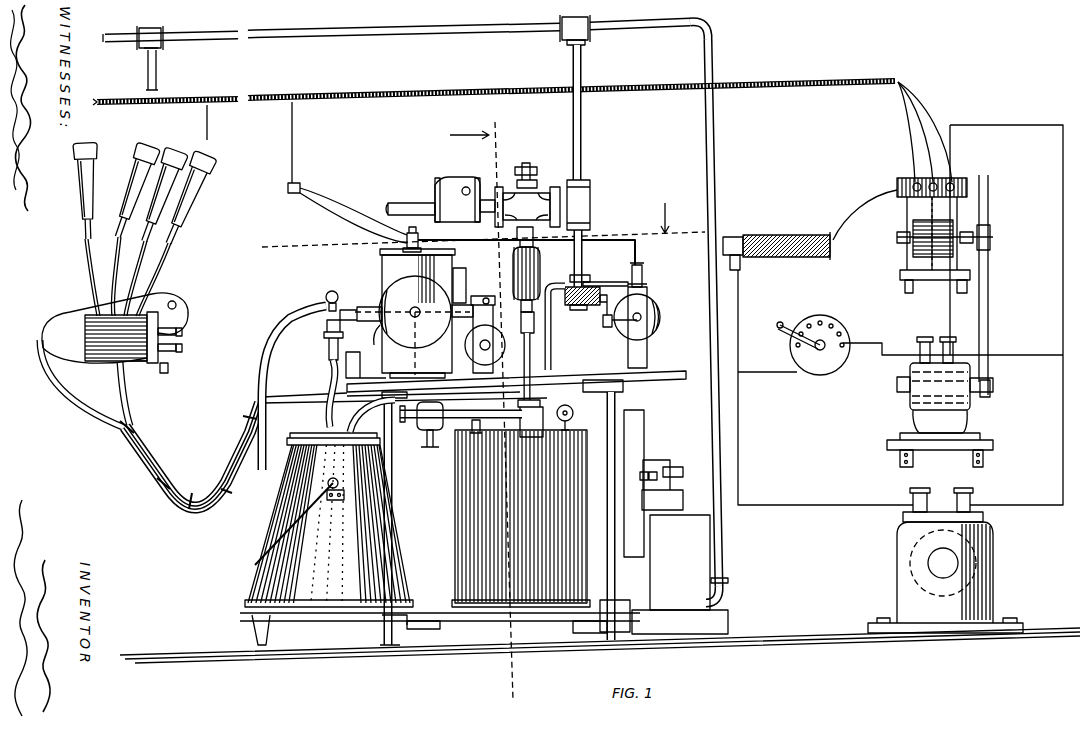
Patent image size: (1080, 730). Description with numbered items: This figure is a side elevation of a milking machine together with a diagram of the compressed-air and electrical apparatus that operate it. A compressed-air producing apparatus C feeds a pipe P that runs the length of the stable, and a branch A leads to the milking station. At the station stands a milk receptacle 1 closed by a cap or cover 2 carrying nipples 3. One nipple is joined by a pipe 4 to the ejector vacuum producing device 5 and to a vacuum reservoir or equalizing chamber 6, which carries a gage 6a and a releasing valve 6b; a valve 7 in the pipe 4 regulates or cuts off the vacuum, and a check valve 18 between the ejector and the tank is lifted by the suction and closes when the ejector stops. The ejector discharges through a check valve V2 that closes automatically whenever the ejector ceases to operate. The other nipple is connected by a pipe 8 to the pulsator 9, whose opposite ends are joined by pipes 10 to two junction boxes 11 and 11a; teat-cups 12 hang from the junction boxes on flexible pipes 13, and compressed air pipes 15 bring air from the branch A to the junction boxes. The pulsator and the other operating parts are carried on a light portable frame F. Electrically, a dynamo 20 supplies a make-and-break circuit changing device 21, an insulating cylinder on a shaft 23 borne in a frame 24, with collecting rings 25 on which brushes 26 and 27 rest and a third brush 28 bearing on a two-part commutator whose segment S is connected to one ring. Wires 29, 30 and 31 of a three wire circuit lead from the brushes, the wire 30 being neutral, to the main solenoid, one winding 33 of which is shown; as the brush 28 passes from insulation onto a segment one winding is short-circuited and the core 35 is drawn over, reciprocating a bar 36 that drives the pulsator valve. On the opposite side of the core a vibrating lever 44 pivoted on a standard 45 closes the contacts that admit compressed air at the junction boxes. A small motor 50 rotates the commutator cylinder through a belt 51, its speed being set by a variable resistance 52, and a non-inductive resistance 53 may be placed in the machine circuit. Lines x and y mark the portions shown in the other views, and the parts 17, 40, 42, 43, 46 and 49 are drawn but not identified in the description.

The milk receptacle 1 is at (297, 521).
The cap or cover 2 is at (292, 456).
The nipples 3 is at (378, 420).
The pipe 4 is at (476, 404).
The vacuum producing device 5 is at (536, 186).
The vacuum reservoir or equalizing chamber 6 is at (456, 531).
The gage 6a is at (573, 413).
The releasing valve 6b is at (470, 436).
The valve 7 is at (427, 446).
The pipe 8 is at (322, 416).
The pulsator 9 is at (326, 299).
The vacuum pipes 10 is at (274, 388).
The junction box 11 is at (85, 330).
The junction box 11a is at (130, 366).
The teat-cups 12 is at (100, 148).
The flexible pipes 13 is at (90, 262).
The compressed air pipes 15 is at (557, 352).
The clamp 17 is at (184, 322).
The check valve 18 is at (540, 274).
The dynamo 20 is at (975, 565).
The make-and-break circuit changing device 21 is at (932, 238).
The shaft 23 is at (992, 238).
The frame 24 is at (935, 282).
The collecting rings 25 is at (905, 266).
The brush 26 is at (905, 212).
The brush 27 is at (953, 219).
The third brush 28 is at (932, 224).
The wire 29 is at (212, 138).
The neutral wire 30 is at (212, 146).
The wire 31 is at (207, 141).
The solenoid coil 33 is at (447, 290).
The core 35 is at (400, 300).
The bar 36 is at (374, 337).
The wheel 40 is at (660, 324).
The valve casing 42 is at (576, 306).
The coupling 43 is at (359, 306).
The vibrating lever 44 is at (470, 303).
The standard 45 is at (412, 316).
The bolt 46 is at (180, 304).
The rod 49 is at (497, 336).
The motor 50 is at (907, 405).
The belt 51 is at (988, 334).
The variable resistance 52 is at (817, 362).
The non-inductive resistance 53 is at (771, 235).
The branch pipe A is at (586, 133).
The pipe P is at (485, 32).
The compressed-air producing apparatus C is at (680, 337).
The light portable frame F is at (608, 487).
The commutator segment S is at (926, 237).
The check valve V2 is at (450, 195).
The section line x is at (480, 228).
The section line y is at (488, 410).